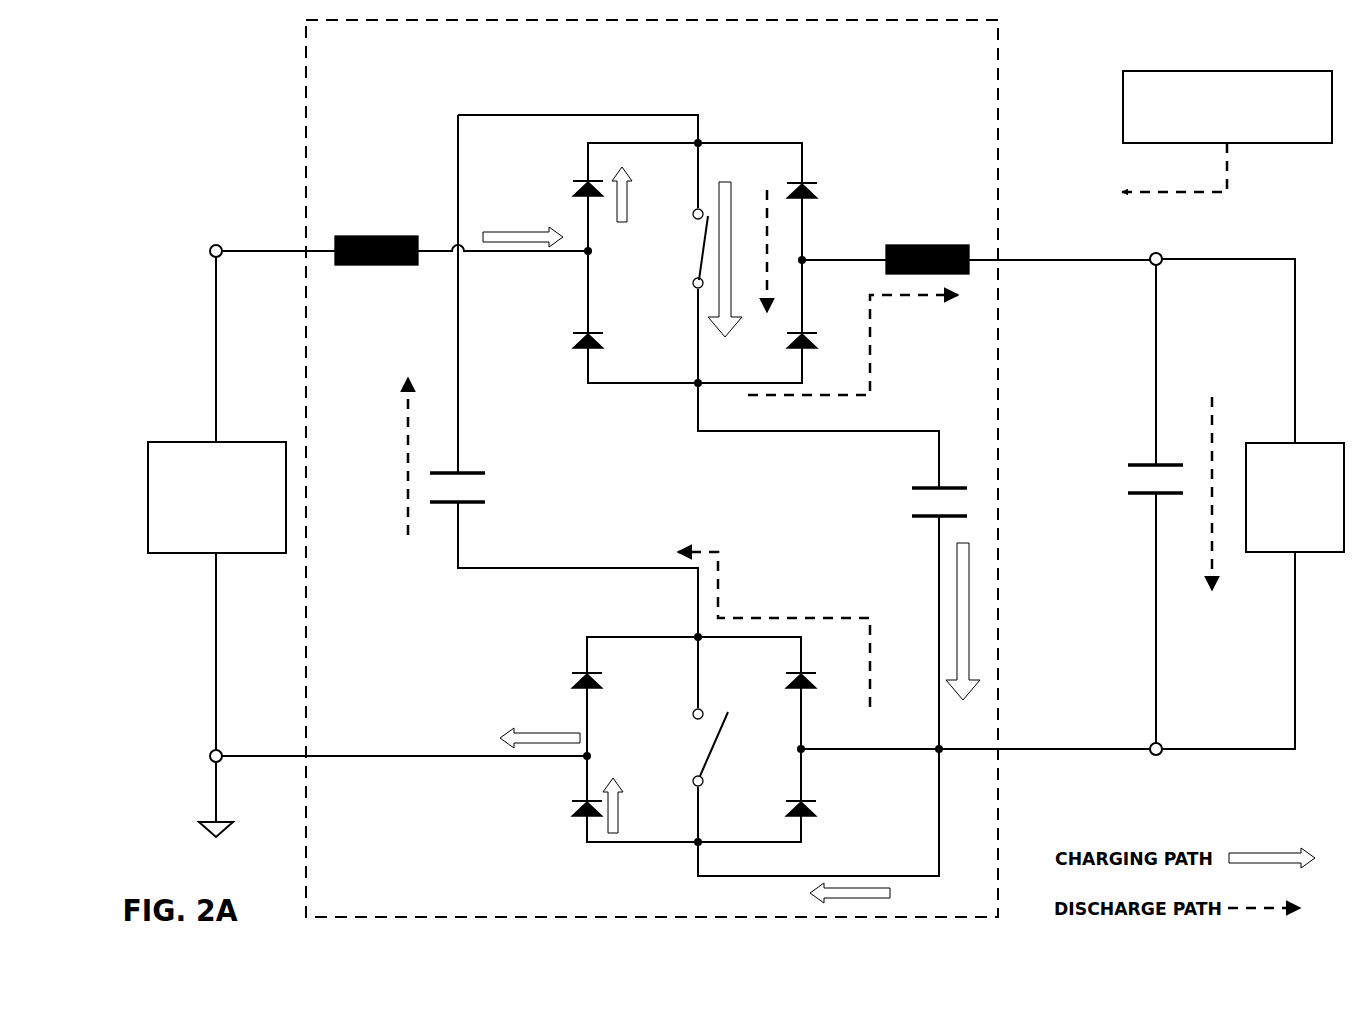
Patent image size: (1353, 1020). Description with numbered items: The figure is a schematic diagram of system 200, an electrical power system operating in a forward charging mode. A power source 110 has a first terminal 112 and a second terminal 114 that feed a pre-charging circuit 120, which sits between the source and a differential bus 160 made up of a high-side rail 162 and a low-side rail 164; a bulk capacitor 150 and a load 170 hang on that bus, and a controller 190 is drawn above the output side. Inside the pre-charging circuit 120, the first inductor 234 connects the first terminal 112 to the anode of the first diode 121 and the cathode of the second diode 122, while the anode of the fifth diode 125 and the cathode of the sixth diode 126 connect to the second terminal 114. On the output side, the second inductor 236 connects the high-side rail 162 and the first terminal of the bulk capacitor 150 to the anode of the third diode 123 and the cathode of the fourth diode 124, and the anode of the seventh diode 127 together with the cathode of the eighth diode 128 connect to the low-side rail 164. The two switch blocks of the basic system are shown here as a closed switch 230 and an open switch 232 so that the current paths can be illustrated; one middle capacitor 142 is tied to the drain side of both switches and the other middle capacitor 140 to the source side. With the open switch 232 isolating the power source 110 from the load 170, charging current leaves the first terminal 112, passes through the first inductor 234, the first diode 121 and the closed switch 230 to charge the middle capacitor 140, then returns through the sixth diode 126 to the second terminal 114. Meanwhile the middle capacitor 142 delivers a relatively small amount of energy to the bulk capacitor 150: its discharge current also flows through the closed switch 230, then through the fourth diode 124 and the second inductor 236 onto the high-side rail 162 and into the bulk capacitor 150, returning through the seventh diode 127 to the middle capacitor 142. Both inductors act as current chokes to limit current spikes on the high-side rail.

The system 200 is at (217, 46).
The power source 110 is at (197, 535).
The first terminal 112 is at (215, 245).
The second terminal 114 is at (215, 762).
The pre-charging circuit 120 is at (634, 77).
The diode D1 121 is at (528, 219).
The diode D2 122 is at (532, 367).
The diode D3 123 is at (826, 209).
The diode D4 124 is at (826, 363).
The diode D5 125 is at (534, 703).
The diode D6 126 is at (526, 832).
The diode D7 127 is at (858, 702).
The diode D8 128 is at (858, 832).
The middle capacitor 140 is at (808, 546).
The middle capacitor 142 is at (548, 529).
The bulk capacitor 150 is at (1097, 573).
The differential bus 160 is at (1262, 250).
The high-side rail 162 is at (1161, 266).
The low-side rail 164 is at (1161, 744).
The load 170 is at (1277, 524).
The controller 190 is at (1247, 132).
The closed switch 230 is at (667, 284).
The open switch 232 is at (628, 772).
The inductor L1 234 is at (358, 230).
The inductor L2 236 is at (909, 238).